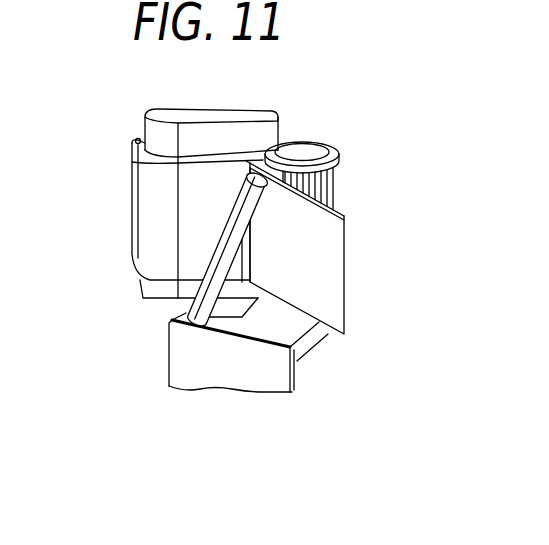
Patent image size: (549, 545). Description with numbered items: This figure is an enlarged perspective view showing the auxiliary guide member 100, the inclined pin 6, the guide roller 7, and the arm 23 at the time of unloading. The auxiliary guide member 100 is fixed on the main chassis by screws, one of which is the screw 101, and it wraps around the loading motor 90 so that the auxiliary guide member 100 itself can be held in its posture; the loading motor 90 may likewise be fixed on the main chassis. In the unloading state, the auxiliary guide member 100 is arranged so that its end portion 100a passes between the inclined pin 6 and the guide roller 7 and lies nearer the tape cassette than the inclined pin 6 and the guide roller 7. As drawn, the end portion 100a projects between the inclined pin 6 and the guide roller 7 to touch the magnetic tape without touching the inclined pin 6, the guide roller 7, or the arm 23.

The inclined pin 6 is at (226, 237).
The guide roller 7 is at (329, 185).
The arm 23 is at (193, 354).
The loading motor 90 is at (209, 116).
The auxiliary guide member 100 is at (298, 292).
The end portion 100a is at (330, 251).
The screw 101 is at (137, 139).